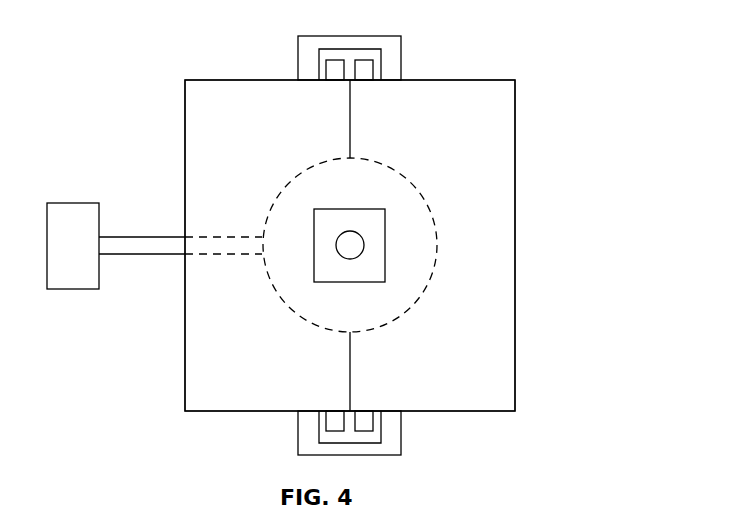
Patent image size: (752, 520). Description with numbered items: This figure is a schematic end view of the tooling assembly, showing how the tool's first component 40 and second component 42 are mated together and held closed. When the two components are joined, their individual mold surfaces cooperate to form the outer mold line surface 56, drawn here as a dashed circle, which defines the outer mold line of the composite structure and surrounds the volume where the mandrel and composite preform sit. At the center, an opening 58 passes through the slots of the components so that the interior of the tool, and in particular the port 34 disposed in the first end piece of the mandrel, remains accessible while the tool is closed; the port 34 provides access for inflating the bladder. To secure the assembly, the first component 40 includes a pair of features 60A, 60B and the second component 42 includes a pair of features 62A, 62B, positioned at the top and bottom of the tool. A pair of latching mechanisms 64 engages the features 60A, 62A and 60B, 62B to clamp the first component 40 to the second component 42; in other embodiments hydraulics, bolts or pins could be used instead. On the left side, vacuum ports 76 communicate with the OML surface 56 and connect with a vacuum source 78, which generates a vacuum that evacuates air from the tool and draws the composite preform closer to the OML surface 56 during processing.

The port 34 is at (362, 248).
The first component 40 is at (470, 80).
The second component 42 is at (222, 80).
The outer mold line surface 56 is at (420, 196).
The opening 58 is at (370, 282).
The feature 60A is at (322, 72).
The feature 60B is at (322, 418).
The feature 62A is at (378, 72).
The feature 62B is at (378, 418).
The latching mechanism 64 is at (360, 36).
The vacuum port 76 is at (198, 237).
The vacuum source 78 is at (75, 203).